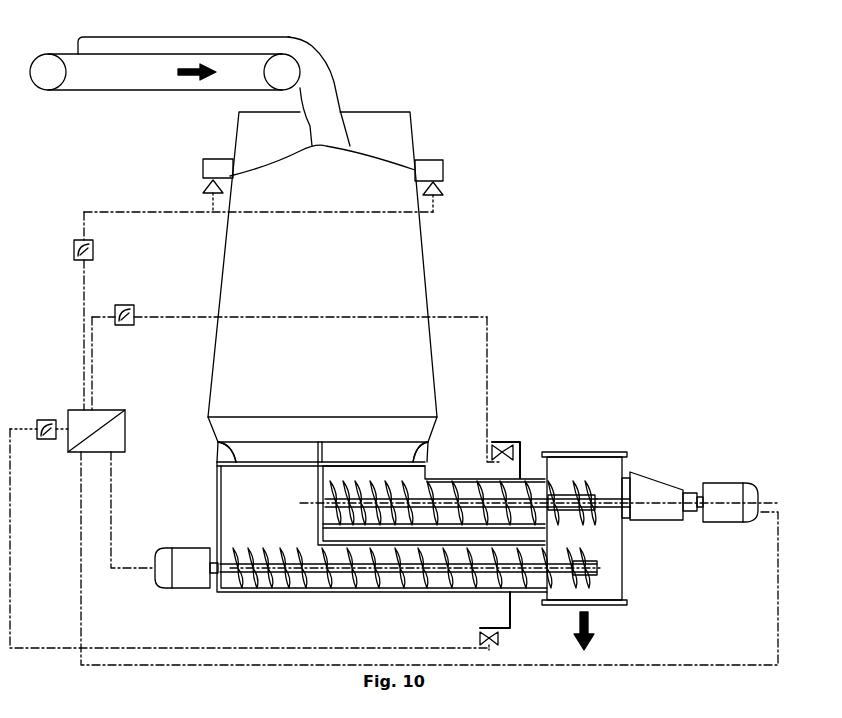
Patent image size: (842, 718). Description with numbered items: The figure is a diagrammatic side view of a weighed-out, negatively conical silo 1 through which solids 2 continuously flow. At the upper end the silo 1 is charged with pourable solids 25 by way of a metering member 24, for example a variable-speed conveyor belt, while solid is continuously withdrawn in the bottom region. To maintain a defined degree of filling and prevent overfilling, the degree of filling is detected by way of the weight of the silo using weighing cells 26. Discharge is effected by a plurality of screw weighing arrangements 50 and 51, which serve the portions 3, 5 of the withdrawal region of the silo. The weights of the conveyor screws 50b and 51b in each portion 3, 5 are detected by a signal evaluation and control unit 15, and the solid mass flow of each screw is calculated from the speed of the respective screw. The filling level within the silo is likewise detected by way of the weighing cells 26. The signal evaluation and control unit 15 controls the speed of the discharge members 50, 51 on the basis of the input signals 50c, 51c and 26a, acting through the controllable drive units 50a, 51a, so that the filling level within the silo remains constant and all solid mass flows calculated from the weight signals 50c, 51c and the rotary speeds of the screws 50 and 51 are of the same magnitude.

The negatively conical silo 1 is at (413, 120).
The solids 2 is at (273, 166).
The portion of the withdrawal region 3 is at (420, 463).
The portion of the withdrawal region 5 is at (222, 459).
The signal evaluation and control unit 15 is at (72, 421).
The metering member 24 is at (160, 92).
The pourable solids 25 is at (284, 43).
The weighing cells 26 is at (208, 185).
The input signal 26a is at (74, 244).
The screw weighing arrangement 50 is at (450, 492).
The controllable drive unit 50a is at (718, 483).
The conveyor screw 50b is at (505, 445).
The input signal (weight) 50c is at (127, 306).
The screw weighing arrangement 51 is at (295, 585).
The controllable drive unit 51a is at (178, 553).
The conveyor screw 51b is at (482, 642).
The input signal (weight) 51c is at (48, 441).